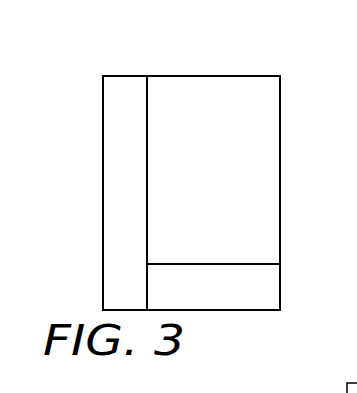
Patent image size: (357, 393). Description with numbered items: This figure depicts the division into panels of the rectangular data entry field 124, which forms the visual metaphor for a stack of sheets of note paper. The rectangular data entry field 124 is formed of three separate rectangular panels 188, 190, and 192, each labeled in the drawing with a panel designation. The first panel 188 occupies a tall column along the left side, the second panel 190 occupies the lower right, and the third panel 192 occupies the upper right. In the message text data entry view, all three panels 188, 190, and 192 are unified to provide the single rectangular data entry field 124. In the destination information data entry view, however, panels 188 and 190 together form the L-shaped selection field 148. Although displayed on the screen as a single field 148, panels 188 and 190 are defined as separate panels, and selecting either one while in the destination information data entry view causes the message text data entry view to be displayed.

The rectangular data entry field 124 is at (204, 62).
The rectangular panel 188 is at (115, 128).
The rectangular panel 192 is at (243, 90).
The rectangular panel 190 is at (247, 302).
The L-shaped selection field 148 is at (160, 277).